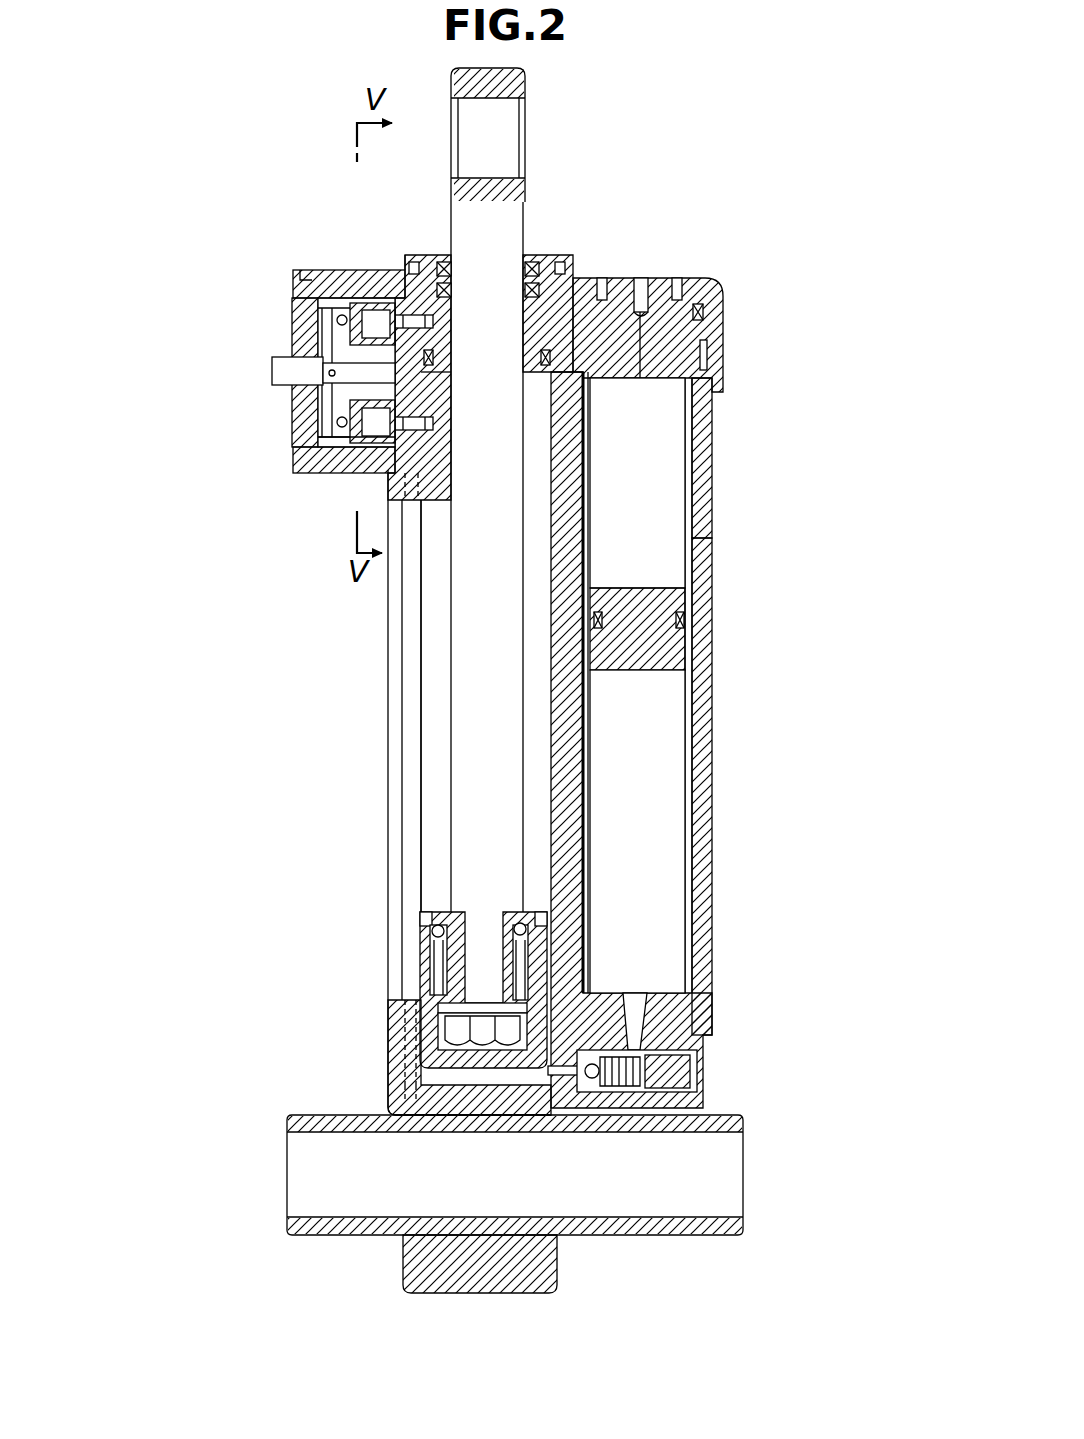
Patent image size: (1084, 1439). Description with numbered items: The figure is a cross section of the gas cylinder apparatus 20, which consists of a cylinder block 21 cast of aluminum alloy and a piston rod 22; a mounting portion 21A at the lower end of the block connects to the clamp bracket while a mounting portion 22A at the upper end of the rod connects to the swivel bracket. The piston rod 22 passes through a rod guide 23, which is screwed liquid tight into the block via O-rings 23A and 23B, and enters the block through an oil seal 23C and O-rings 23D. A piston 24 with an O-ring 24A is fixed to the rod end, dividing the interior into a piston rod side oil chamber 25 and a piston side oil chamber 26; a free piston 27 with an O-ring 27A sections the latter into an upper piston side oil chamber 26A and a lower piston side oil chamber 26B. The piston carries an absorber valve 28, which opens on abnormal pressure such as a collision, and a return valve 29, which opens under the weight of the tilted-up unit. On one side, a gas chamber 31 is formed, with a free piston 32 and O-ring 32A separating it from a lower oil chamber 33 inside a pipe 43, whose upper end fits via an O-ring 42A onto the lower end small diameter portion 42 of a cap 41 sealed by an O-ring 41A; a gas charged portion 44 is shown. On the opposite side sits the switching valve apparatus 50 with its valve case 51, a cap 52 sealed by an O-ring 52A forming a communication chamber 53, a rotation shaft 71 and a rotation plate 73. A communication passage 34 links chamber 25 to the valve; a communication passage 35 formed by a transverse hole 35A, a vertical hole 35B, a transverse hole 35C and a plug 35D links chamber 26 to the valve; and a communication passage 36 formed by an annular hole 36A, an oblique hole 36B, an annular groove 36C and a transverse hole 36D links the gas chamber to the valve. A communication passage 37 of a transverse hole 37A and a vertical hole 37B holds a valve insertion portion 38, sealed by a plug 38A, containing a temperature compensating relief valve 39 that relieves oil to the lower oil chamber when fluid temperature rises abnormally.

The gas cylinder apparatus 20 is at (716, 168).
The cylinder block 21 is at (390, 656).
The mounting portion 21A is at (348, 1234).
The piston rod 22 is at (517, 232).
The mounting portion 22A is at (520, 80).
The rod guide 23 is at (563, 265).
The O-ring 23A is at (407, 277).
The O-ring 23B is at (436, 360).
The oil seal 23C is at (452, 275).
The O-rings 23D is at (452, 300).
The piston 24 is at (433, 965).
The O-ring 24A is at (430, 924).
The piston rod side oil chamber 25 is at (433, 606).
The piston side oil chamber 26 is at (465, 1075).
The upper piston side oil chamber 26A is at (520, 1040).
The lower piston side oil chamber 26B is at (494, 1050).
The free piston 27 is at (515, 1015).
The O-ring 27A is at (445, 1006).
The absorber valve 28 is at (430, 934).
The return valve 29 is at (517, 916).
The gas chamber 31 is at (672, 440).
The free piston 32 is at (688, 652).
The O-ring 32A is at (688, 622).
The lower oil chamber 33 is at (672, 860).
The communication passage 34 is at (427, 375).
The communication passage 35 is at (410, 492).
The transverse hole 35A is at (395, 1095).
The vertical hole 35B is at (408, 1022).
The transverse hole 35C is at (420, 428).
The plug 35D is at (413, 1070).
The communication passage 36 is at (580, 644).
The annular hole 36A is at (580, 682).
The oblique hole 36B is at (590, 405).
The annular groove 36C is at (590, 470).
The transverse hole 36D is at (434, 322).
The communication passage 37 is at (642, 1015).
The transverse hole 37A is at (545, 1075).
The vertical hole 37B is at (640, 1031).
The valve insertion portion 38 is at (660, 1066).
The plug 38A is at (702, 1076).
The temperature compensating relief valve 39 is at (578, 1072).
The cap 41 is at (707, 282).
The O-ring 41A is at (708, 312).
The lower end small diameter portion 42 is at (712, 378).
The O-ring 42A is at (705, 355).
The pipe 43 is at (704, 515).
The gas charged portion 44 is at (660, 278).
The switching valve apparatus 50 is at (272, 324).
The valve case 51 is at (350, 275).
The cap 52 is at (300, 430).
The O-ring 52A is at (296, 455).
The communication chamber 53 is at (322, 470).
The rotation shaft 71 is at (282, 378).
The rotation plate 73 is at (300, 300).